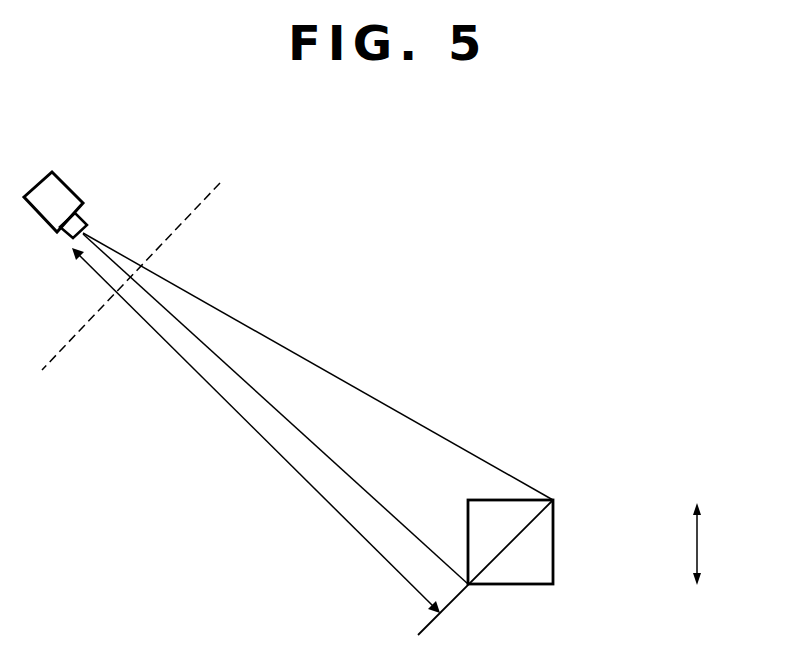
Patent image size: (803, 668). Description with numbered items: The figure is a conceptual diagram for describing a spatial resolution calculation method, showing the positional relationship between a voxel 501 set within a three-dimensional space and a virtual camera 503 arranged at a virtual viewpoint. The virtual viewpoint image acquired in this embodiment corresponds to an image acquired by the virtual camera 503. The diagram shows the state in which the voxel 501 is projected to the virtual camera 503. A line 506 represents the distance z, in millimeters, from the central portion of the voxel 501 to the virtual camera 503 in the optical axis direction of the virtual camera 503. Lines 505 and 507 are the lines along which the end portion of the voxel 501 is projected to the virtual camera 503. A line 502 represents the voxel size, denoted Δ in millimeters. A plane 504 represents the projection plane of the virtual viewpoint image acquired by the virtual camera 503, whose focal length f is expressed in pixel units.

The voxel 501 is at (555, 530).
The line representing voxel size 502 is at (698, 530).
The virtual camera 503 is at (68, 184).
The plane 504 is at (200, 205).
The line 505 is at (358, 390).
The line representing distance z 506 is at (272, 448).
The line 507 is at (365, 485).